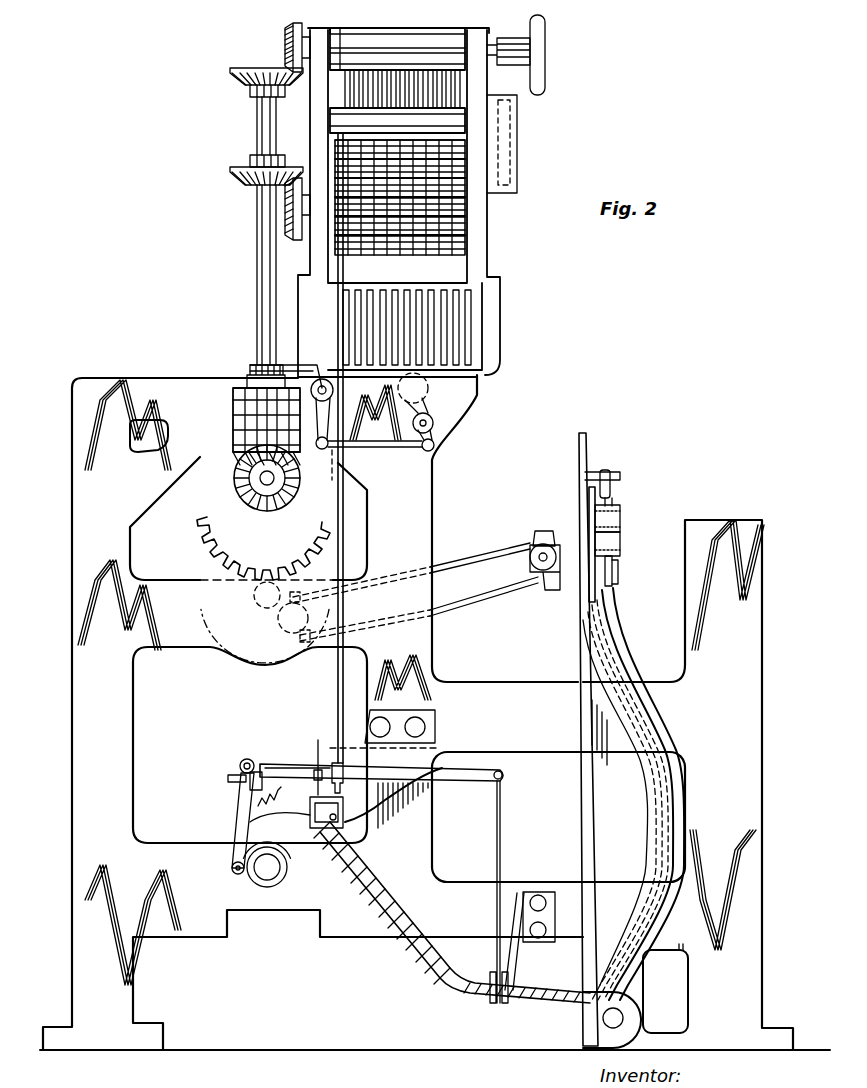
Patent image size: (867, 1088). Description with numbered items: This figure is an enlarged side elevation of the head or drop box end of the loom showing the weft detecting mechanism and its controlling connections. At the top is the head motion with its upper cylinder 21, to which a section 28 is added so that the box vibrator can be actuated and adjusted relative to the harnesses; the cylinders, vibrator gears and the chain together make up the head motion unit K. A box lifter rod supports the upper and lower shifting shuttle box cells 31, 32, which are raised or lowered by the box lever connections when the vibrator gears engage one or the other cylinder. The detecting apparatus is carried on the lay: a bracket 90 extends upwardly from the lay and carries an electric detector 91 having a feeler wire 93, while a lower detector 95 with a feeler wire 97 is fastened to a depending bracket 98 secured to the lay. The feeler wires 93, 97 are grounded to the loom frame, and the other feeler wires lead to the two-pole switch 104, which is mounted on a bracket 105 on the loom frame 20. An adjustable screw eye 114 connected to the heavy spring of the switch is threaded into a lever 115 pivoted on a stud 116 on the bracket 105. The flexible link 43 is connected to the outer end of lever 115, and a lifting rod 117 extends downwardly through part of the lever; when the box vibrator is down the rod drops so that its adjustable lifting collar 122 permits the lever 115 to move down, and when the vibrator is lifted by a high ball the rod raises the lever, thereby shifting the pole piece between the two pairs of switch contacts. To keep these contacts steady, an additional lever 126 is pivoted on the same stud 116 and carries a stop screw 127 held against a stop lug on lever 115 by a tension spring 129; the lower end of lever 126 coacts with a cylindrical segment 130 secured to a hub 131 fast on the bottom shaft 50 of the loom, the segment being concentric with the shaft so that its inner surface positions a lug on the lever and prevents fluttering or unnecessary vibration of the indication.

The frame 20 is at (762, 734).
The upper cylinder 21 is at (437, 32).
The section 28 is at (343, 30).
The type drum unit K is at (388, 40).
The upper shifting shuttle box cell 31 is at (610, 520).
The lower shifting shuttle box cell 32 is at (620, 545).
The flexible link 43 is at (497, 835).
The bottom shaft 50 is at (275, 870).
The bracket 90 is at (592, 472).
The electric detector 91 is at (610, 480).
The feeler wire 93 is at (620, 505).
The lower detector 95 is at (612, 575).
The feeler wire 97 is at (622, 578).
The depending bracket 98 is at (608, 590).
The two-pole switch 104 is at (310, 812).
The bracket 105 is at (432, 765).
The adjustable screw eye 114 is at (318, 765).
The lever 115 is at (300, 764).
The stud 116 is at (247, 759).
The lifting rod 117 is at (343, 545).
The adjustable lifting collar 122 is at (343, 780).
The lever 126 is at (238, 808).
The stop screw 127 is at (228, 778).
The tension spring 129 is at (272, 800).
The cylindrical segment 130 is at (262, 845).
The hub 131 is at (280, 862).